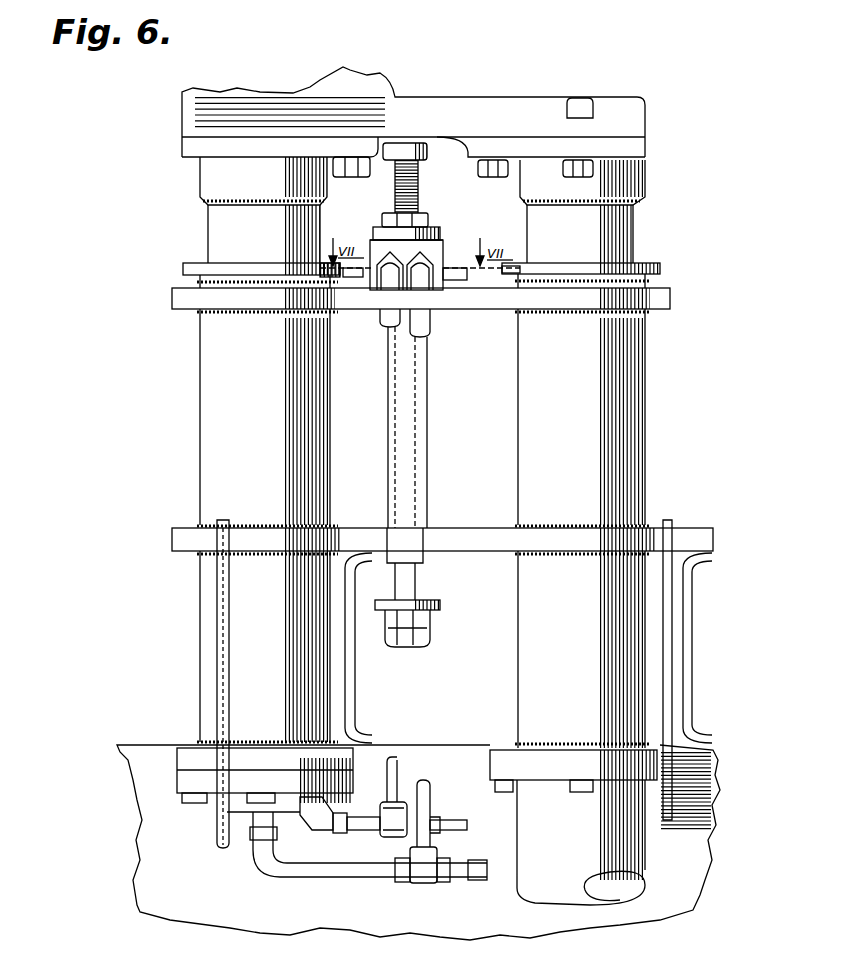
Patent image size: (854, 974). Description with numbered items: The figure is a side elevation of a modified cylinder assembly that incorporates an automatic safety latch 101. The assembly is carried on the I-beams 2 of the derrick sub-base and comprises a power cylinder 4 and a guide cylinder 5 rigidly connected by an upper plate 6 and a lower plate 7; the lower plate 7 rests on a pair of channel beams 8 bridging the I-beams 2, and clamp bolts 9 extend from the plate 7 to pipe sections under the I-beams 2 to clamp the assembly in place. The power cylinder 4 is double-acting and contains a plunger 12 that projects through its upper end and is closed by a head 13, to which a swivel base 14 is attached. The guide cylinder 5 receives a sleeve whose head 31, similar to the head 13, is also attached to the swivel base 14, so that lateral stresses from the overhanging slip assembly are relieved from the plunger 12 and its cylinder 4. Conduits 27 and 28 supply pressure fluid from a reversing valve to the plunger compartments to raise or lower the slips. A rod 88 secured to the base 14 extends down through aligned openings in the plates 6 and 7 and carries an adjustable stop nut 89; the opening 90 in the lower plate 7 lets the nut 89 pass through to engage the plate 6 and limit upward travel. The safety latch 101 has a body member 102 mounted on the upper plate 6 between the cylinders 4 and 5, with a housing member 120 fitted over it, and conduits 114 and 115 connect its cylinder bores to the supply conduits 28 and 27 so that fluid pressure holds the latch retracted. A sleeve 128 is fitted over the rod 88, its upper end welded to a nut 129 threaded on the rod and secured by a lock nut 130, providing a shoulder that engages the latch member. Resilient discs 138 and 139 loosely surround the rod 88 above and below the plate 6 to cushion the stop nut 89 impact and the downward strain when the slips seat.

The I-beams 2 is at (148, 853).
The power cylinder 4 is at (218, 431).
The guide cylinder 5 is at (627, 427).
The upper plate 6 is at (668, 300).
The lower plate 7 is at (705, 514).
The channel beams 8 is at (683, 678).
The clamp bolts 9 is at (668, 626).
The plunger 12 is at (220, 232).
The head 13 is at (213, 181).
The swivel base 14 is at (445, 123).
The conduit 27 is at (378, 876).
The conduit 28 is at (355, 832).
The head 31 is at (640, 186).
The rod 88 is at (403, 583).
The stop nut 89 is at (430, 628).
The opening 90 is at (437, 543).
The automatic safety latch 101 is at (443, 237).
The body member 102 is at (380, 254).
The conduit 114 is at (382, 320).
The conduit 115 is at (430, 326).
The housing member 120 is at (448, 284).
The sleeve 128 is at (412, 452).
The nut 129 is at (432, 226).
The lock nut 130 is at (420, 218).
The resilient disc 138 is at (380, 236).
The resilient disc 139 is at (436, 606).